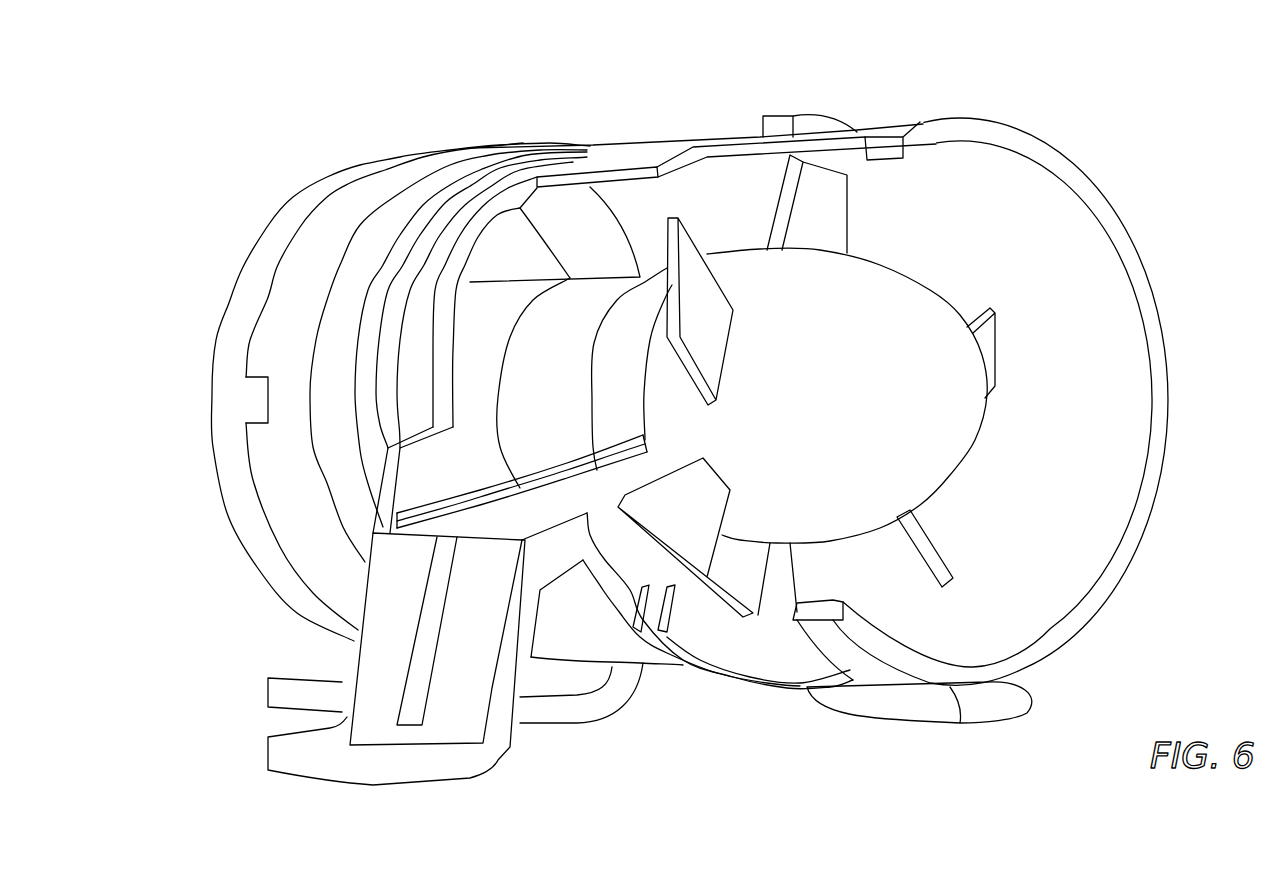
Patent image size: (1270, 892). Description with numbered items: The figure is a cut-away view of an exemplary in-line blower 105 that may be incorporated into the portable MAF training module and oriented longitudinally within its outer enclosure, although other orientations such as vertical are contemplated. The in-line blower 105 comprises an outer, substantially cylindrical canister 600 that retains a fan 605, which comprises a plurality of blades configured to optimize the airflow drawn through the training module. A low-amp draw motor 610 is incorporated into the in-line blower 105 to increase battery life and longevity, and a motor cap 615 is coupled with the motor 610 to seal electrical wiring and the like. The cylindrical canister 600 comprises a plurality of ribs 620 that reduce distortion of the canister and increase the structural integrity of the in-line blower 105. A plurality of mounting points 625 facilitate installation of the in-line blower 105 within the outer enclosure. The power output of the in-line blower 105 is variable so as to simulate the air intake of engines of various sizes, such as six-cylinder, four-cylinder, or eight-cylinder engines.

The in-line blower 105 is at (1063, 102).
The cylindrical canister 600 is at (520, 148).
The fan 605 is at (877, 595).
The motor 610 is at (483, 328).
The motor cap 615 is at (563, 333).
The ribs 620 is at (264, 398).
The mounting points 625 is at (485, 755).